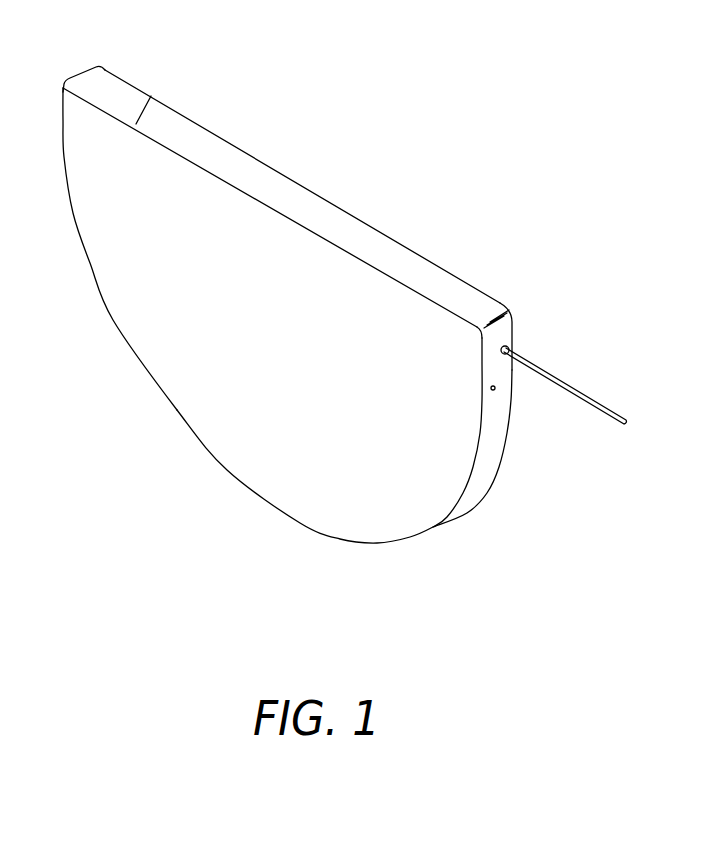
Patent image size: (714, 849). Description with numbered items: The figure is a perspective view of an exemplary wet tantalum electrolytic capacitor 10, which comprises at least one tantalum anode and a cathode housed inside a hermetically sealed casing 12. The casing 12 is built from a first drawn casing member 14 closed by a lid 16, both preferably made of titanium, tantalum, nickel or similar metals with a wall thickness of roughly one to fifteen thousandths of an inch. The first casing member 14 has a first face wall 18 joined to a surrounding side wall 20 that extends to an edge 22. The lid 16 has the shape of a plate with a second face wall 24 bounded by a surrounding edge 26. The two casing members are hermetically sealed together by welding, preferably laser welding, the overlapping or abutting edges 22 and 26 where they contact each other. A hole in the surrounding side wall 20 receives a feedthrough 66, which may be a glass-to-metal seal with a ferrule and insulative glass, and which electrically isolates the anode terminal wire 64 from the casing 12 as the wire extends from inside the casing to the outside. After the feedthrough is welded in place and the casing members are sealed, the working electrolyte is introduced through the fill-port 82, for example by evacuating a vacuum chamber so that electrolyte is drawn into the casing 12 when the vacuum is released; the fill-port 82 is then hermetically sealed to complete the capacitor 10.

The capacitor 10 is at (318, 172).
The casing 12 is at (79, 71).
The first drawn casing member 14 is at (392, 237).
The lid 16 is at (120, 330).
The first face wall 18 is at (222, 137).
The surrounding side wall 20 is at (413, 273).
The edge 22 is at (150, 98).
The second face wall 24 is at (245, 463).
The surrounding edge 26 is at (302, 223).
The anode terminal wire 64 is at (600, 403).
The feedthrough 66 is at (524, 345).
The fill-port 82 is at (496, 389).